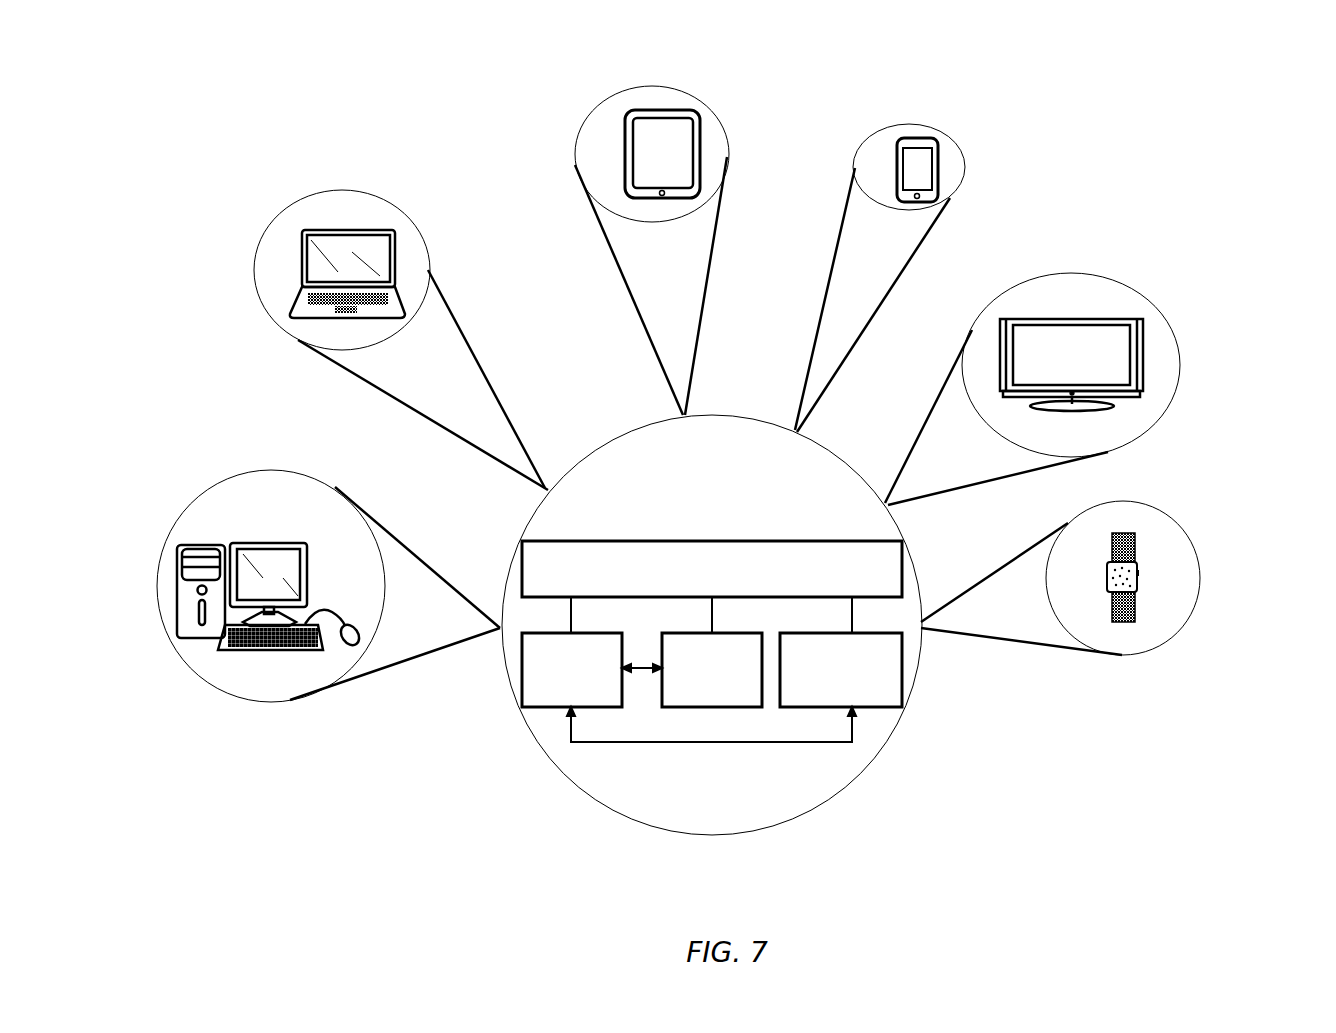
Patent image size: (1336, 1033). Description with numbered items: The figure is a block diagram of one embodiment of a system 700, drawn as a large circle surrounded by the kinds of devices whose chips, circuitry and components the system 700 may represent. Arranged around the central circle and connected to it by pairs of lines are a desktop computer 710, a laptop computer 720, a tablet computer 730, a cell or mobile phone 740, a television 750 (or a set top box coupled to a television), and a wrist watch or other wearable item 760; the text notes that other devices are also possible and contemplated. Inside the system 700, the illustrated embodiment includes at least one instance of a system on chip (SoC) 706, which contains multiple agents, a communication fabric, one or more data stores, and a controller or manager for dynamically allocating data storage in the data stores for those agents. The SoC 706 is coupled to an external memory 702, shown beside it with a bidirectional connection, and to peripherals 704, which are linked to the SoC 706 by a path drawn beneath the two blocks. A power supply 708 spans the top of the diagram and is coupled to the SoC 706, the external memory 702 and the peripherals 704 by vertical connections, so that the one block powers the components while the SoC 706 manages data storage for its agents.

The system 700 is at (697, 460).
The external memory 702 is at (697, 696).
The peripherals 704 is at (827, 690).
The system on chip (SoC) 706 is at (557, 690).
The power supply 708 is at (697, 589).
The desktop computer 710 is at (262, 516).
The laptop computer 720 is at (263, 281).
The tablet computer 730 is at (619, 161).
The cell or mobile phone 740 is at (893, 181).
The television 750 is at (1088, 304).
The wrist watch or other wearable item 760 is at (1186, 591).